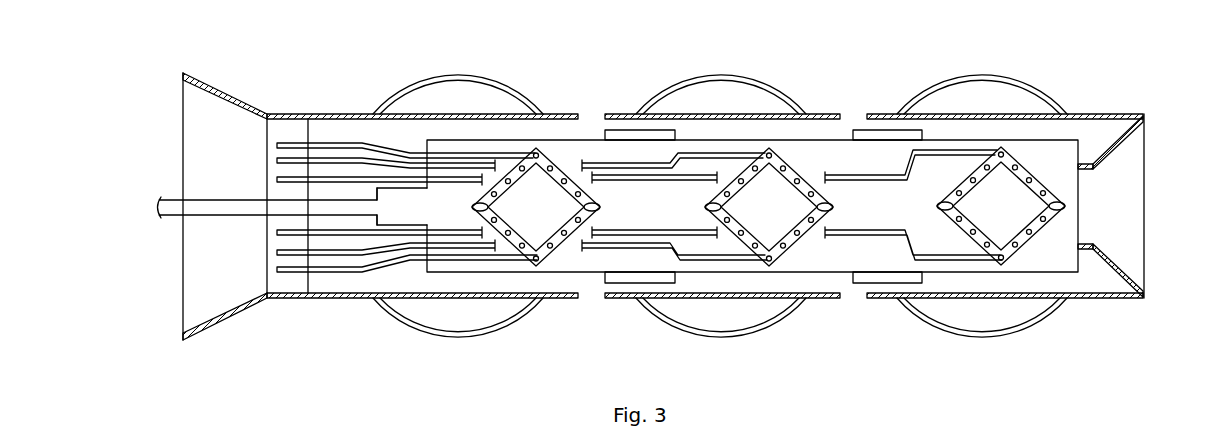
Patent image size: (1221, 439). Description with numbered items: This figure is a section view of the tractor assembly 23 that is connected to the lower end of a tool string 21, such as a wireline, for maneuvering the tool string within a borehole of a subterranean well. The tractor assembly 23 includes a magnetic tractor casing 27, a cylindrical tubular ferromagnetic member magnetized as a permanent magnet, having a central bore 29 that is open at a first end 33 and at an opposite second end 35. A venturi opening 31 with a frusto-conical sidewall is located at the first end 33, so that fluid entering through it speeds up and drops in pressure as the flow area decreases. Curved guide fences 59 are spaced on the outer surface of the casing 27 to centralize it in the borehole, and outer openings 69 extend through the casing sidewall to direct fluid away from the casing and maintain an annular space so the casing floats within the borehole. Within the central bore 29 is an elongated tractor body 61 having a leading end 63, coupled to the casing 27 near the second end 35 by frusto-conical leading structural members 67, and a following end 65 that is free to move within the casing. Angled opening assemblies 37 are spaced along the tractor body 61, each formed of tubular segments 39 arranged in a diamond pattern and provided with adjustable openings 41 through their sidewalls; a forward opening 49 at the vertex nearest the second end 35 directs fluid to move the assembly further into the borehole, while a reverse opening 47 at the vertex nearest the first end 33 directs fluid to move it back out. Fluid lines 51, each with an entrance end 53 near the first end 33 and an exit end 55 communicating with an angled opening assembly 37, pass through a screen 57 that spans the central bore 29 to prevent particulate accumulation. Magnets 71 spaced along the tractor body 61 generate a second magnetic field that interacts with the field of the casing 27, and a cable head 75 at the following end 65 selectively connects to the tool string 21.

The tool string 21 is at (250, 198).
The tractor assembly 23 is at (850, 38).
The magnetic tractor casing 27 is at (572, 113).
The central bore 29 is at (712, 280).
The venturi opening 31 is at (213, 90).
The first end 33 is at (291, 85).
The second end 35 is at (1113, 82).
The angled opening assembly 37 is at (1008, 140).
The tubular segment 39 is at (815, 140).
The adjustable opening 41 is at (553, 246).
The reverse opening 47 is at (938, 206).
The forward opening 49 is at (1066, 206).
The fluid line 51 is at (297, 274).
The entrance end 53 is at (275, 270).
The exit end 55 is at (1003, 262).
The screen 57 is at (307, 222).
The guide fence 59 is at (710, 75).
The tractor body 61 is at (948, 138).
The leading end 63 is at (1068, 274).
The following end 65 is at (435, 274).
The leading structural member 67 is at (1116, 145).
The outer opening 69 is at (853, 110).
The magnet 71 is at (882, 279).
The cable head 75 is at (398, 205).